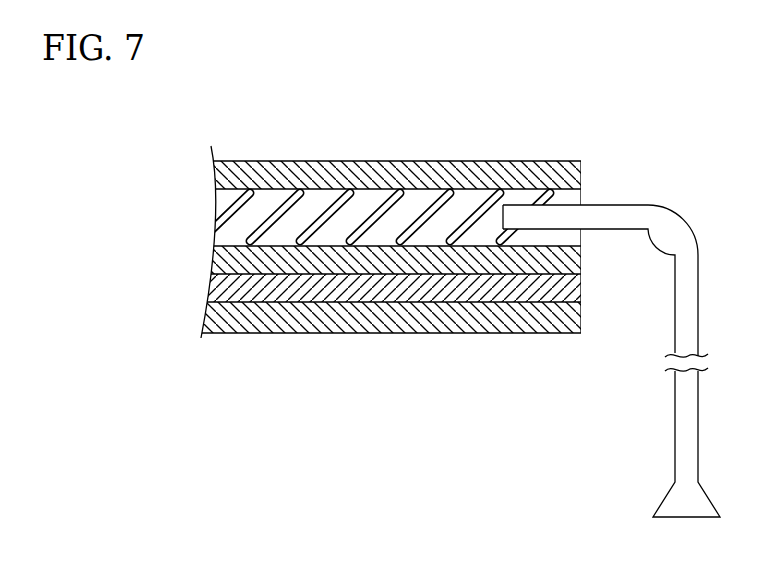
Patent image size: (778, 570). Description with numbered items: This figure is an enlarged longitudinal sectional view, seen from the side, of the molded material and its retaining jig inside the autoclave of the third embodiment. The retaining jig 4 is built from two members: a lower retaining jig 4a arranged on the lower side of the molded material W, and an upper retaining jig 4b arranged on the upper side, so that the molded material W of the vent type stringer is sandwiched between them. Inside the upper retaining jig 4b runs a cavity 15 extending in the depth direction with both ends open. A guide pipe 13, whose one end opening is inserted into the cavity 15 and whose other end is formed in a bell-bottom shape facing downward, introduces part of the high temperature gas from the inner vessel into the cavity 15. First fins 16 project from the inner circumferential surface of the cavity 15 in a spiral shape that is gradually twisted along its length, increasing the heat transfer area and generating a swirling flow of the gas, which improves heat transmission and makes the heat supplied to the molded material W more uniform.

The retaining jig 4 is at (318, 218).
The lower retaining jig 4a is at (213, 317).
The upper retaining jig 4b is at (222, 173).
The guide pipe 13 is at (624, 217).
The cavity 15 is at (360, 220).
The first fins 16 is at (472, 218).
The molded material W is at (386, 292).